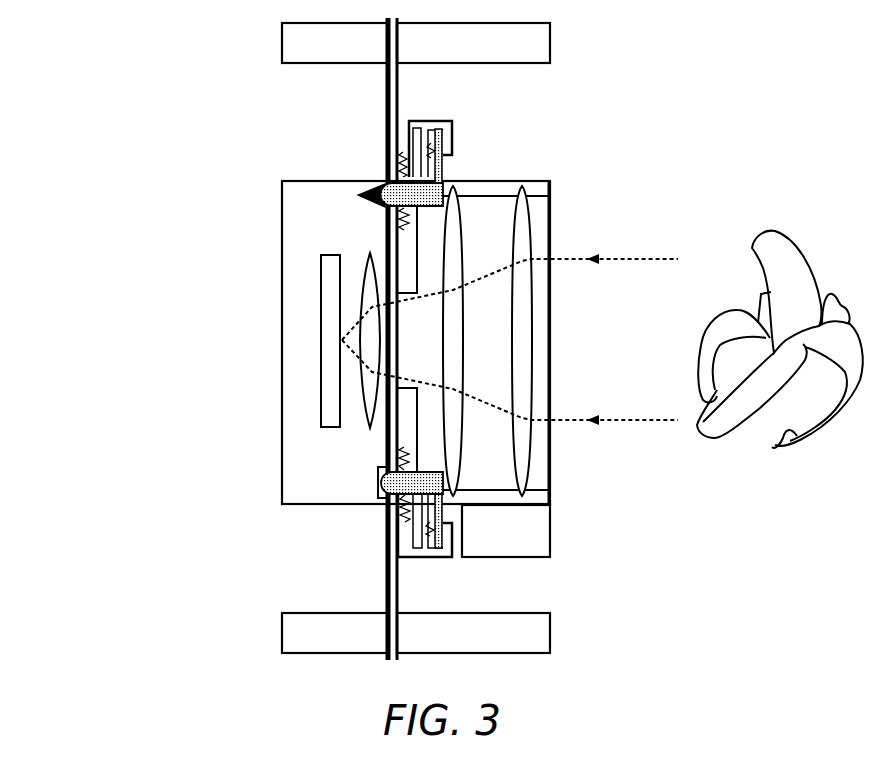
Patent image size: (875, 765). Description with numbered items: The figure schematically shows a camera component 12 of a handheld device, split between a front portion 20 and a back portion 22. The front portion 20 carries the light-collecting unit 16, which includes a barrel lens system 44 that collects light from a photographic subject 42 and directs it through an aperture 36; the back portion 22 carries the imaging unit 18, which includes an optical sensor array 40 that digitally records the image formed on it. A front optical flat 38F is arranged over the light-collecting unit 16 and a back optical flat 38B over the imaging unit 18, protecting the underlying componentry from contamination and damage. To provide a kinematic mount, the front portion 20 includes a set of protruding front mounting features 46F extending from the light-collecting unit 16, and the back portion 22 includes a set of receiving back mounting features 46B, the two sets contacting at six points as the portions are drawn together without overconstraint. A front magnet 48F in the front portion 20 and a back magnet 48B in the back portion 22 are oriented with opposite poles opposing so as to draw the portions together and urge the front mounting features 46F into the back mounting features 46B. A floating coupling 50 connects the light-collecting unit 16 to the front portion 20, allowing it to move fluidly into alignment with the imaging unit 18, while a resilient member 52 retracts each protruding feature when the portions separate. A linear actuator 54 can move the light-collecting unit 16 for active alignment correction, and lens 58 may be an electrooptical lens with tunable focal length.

The camera component 12 is at (156, 526).
The light-collecting unit 16 is at (499, 474).
The imaging unit 18 is at (341, 474).
The front portion 20 is at (544, 131).
The back portion 22 is at (293, 131).
The aperture 36 is at (424, 351).
The back optical flat 38B is at (386, 588).
The front optical flat 38F is at (399, 589).
The optical sensor array 40 is at (320, 335).
The photographic subject 42 is at (769, 393).
The barrel lens system 44 is at (527, 220).
The back mounting features 46B is at (362, 206).
The front mounting features 46F is at (430, 207).
The back magnet 48B is at (335, 338).
The front magnet 48F is at (473, 338).
The floating coupling 50 is at (403, 152).
The resilient member 52 is at (428, 143).
The linear actuator 54 is at (516, 541).
The lens 58 is at (375, 253).